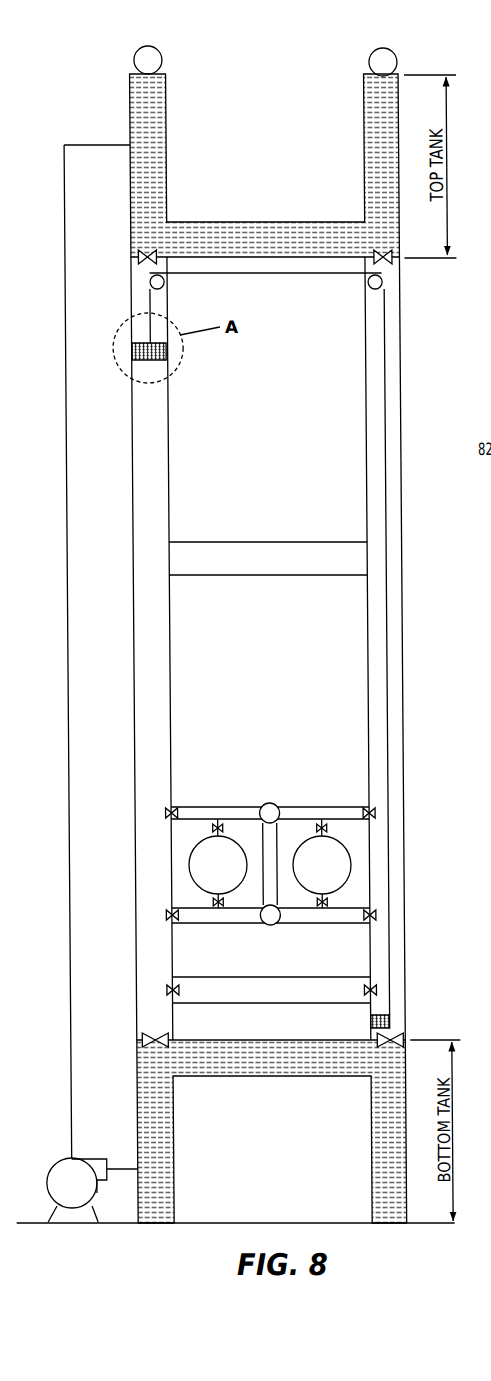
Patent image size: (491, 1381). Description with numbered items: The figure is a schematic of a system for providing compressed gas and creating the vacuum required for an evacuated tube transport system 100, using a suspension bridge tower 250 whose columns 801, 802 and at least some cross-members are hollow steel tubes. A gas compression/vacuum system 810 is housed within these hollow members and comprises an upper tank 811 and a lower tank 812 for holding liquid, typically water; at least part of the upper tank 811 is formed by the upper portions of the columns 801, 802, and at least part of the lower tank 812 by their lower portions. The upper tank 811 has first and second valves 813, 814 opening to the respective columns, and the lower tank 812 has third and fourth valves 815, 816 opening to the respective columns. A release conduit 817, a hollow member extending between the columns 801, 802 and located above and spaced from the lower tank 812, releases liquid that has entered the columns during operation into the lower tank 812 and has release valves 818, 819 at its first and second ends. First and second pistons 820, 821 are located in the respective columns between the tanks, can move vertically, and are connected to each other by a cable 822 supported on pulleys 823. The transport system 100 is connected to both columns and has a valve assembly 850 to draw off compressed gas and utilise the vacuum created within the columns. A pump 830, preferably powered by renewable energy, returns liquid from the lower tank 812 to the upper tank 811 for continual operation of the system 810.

The tube transport system 100 is at (260, 795).
The tower 250 is at (135, 41).
The first column 801 is at (146, 646).
The second column 802 is at (393, 648).
The gas compression/vacuum system 810 is at (420, 883).
The upper tank 811 is at (375, 162).
The lower tank 812 is at (368, 1152).
The first valve 813 is at (142, 263).
The second valve 814 is at (393, 263).
The third valve 815 is at (139, 1039).
The fourth valve 816 is at (400, 1040).
The release conduit 817 is at (274, 988).
The release valve 818 is at (164, 990).
The release valve 819 is at (373, 989).
The first piston 820 is at (137, 342).
The second piston 821 is at (389, 1022).
The cable 822 is at (388, 597).
The pulleys 823 is at (165, 287).
The pump 830 is at (59, 1170).
The valve assembly 850 is at (371, 810).